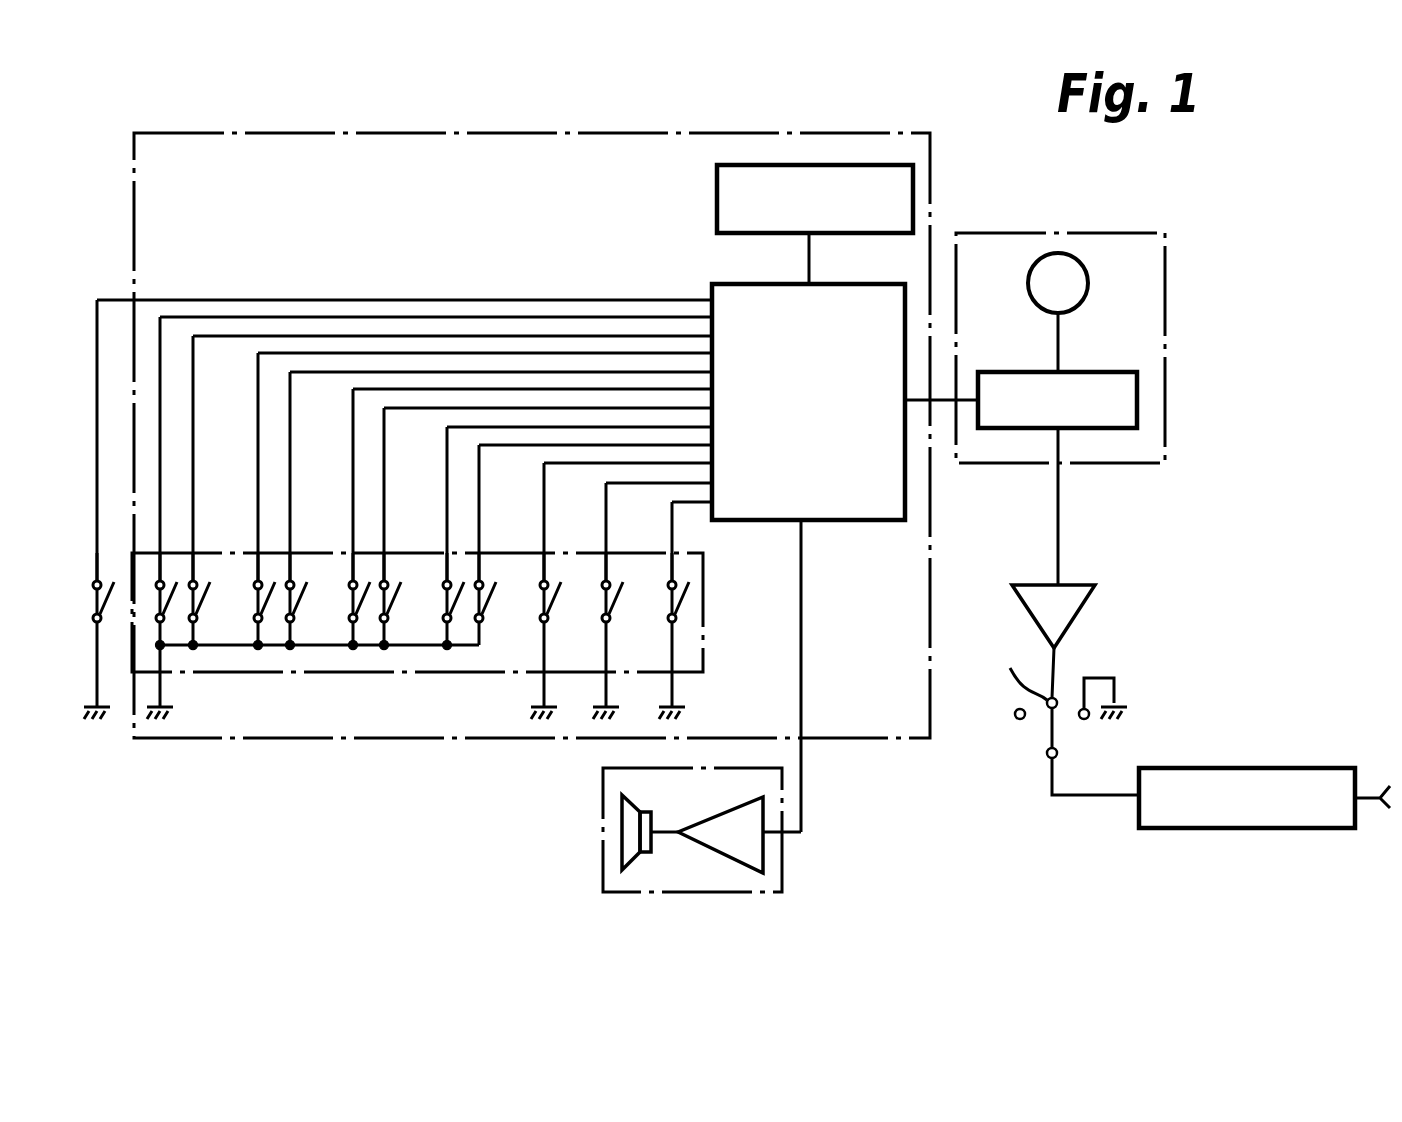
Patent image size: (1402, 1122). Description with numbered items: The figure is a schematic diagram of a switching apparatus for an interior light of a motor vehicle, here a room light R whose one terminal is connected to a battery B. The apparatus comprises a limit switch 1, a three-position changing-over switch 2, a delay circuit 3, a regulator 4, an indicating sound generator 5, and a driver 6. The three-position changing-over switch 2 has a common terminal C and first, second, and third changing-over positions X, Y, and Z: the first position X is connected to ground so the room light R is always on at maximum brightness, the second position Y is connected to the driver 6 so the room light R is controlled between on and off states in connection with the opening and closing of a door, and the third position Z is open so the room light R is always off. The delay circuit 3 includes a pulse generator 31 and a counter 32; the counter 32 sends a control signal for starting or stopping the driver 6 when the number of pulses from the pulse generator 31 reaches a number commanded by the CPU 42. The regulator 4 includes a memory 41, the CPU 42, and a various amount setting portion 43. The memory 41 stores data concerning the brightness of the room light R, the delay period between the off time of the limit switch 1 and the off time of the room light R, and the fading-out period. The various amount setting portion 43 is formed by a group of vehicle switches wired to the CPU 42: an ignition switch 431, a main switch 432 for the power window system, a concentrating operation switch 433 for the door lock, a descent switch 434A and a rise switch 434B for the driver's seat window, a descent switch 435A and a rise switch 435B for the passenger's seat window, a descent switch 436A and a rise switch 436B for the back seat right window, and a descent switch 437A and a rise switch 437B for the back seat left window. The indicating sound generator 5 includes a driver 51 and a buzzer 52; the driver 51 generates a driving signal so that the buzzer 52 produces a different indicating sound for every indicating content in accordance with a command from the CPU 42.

The limit switch 1 is at (90, 602).
The three-position changing-over switch 2 is at (1049, 723).
The delay circuit 3 is at (1167, 262).
The regulator 4 is at (596, 131).
The indicating sound generator 5 is at (602, 876).
The driver 6 is at (1085, 612).
The pulse generator 31 is at (1086, 294).
The counter 32 is at (1138, 403).
The memory 41 is at (717, 196).
The CPU 42 is at (858, 522).
The various amount setting portion 43 is at (705, 620).
The ignition switch 431 is at (666, 603).
The main switch 432 is at (596, 603).
The concentrating operation switch 433 is at (534, 603).
The descent switch 434A is at (473, 607).
The rise switch 434B is at (442, 607).
The descent switch 435A is at (390, 607).
The rise switch 435B is at (348, 602).
The descent switch 436A is at (280, 603).
The rise switch 436B is at (247, 603).
The descent switch 437A is at (203, 607).
The rise switch 437B is at (152, 606).
The driver 51 is at (720, 814).
The buzzer 52 is at (622, 832).
The room light R is at (1250, 768).
The battery B is at (1388, 808).
The first changing-over position X is at (1087, 754).
The second changing-over position Y is at (1036, 688).
The third changing-over position Z is at (1014, 715).
The common terminal C is at (1048, 758).